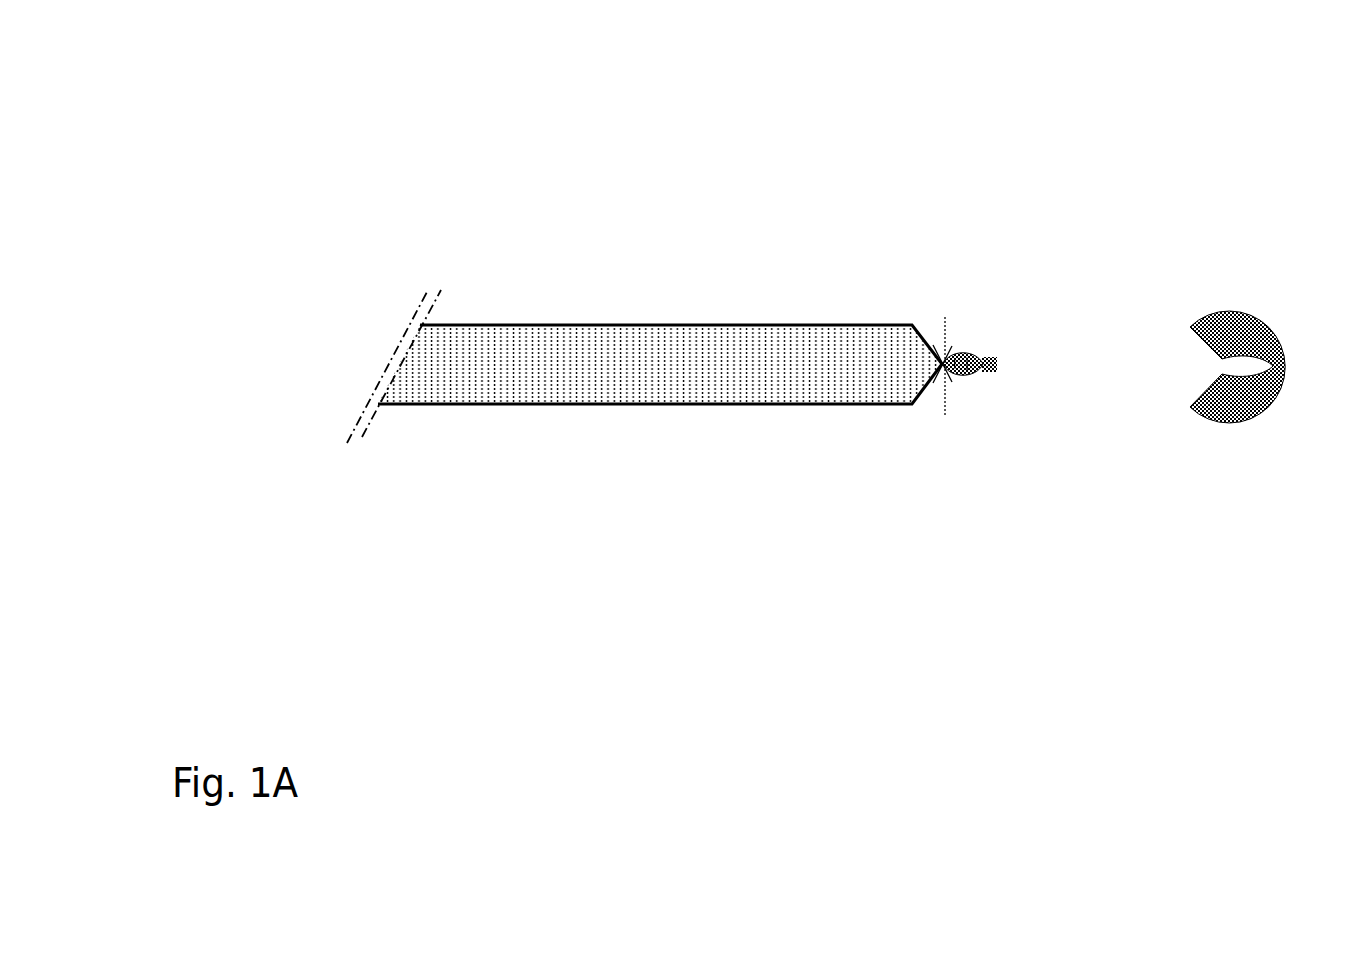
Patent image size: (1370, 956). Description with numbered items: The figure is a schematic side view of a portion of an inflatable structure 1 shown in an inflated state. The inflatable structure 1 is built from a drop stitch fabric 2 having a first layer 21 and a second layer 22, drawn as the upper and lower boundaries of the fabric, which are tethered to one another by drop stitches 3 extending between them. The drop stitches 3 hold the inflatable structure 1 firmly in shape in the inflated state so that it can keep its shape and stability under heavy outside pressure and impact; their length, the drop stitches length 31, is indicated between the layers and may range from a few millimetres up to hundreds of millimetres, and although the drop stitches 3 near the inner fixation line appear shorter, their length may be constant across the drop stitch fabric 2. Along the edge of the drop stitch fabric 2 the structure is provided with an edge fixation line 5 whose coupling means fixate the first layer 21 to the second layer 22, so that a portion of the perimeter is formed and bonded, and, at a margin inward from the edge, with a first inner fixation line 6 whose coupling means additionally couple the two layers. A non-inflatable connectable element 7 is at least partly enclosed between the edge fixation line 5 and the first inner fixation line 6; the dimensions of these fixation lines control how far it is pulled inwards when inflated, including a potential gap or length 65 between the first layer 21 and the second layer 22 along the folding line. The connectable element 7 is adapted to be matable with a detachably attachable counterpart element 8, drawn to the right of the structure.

The inflatable structure 1 is at (372, 150).
The drop stitch fabric 2 is at (644, 393).
The first layer 21 is at (530, 318).
The second layer 22 is at (588, 405).
The drop stitches 3 is at (630, 375).
The drop stitches length 31 is at (748, 283).
The edge fixation line 5 is at (1005, 373).
The first inner fixation line 6 is at (957, 345).
The gap or length between the first layer and the second layer 65 is at (948, 384).
The connectable element 7 is at (975, 383).
The counterpart element 8 is at (1272, 435).